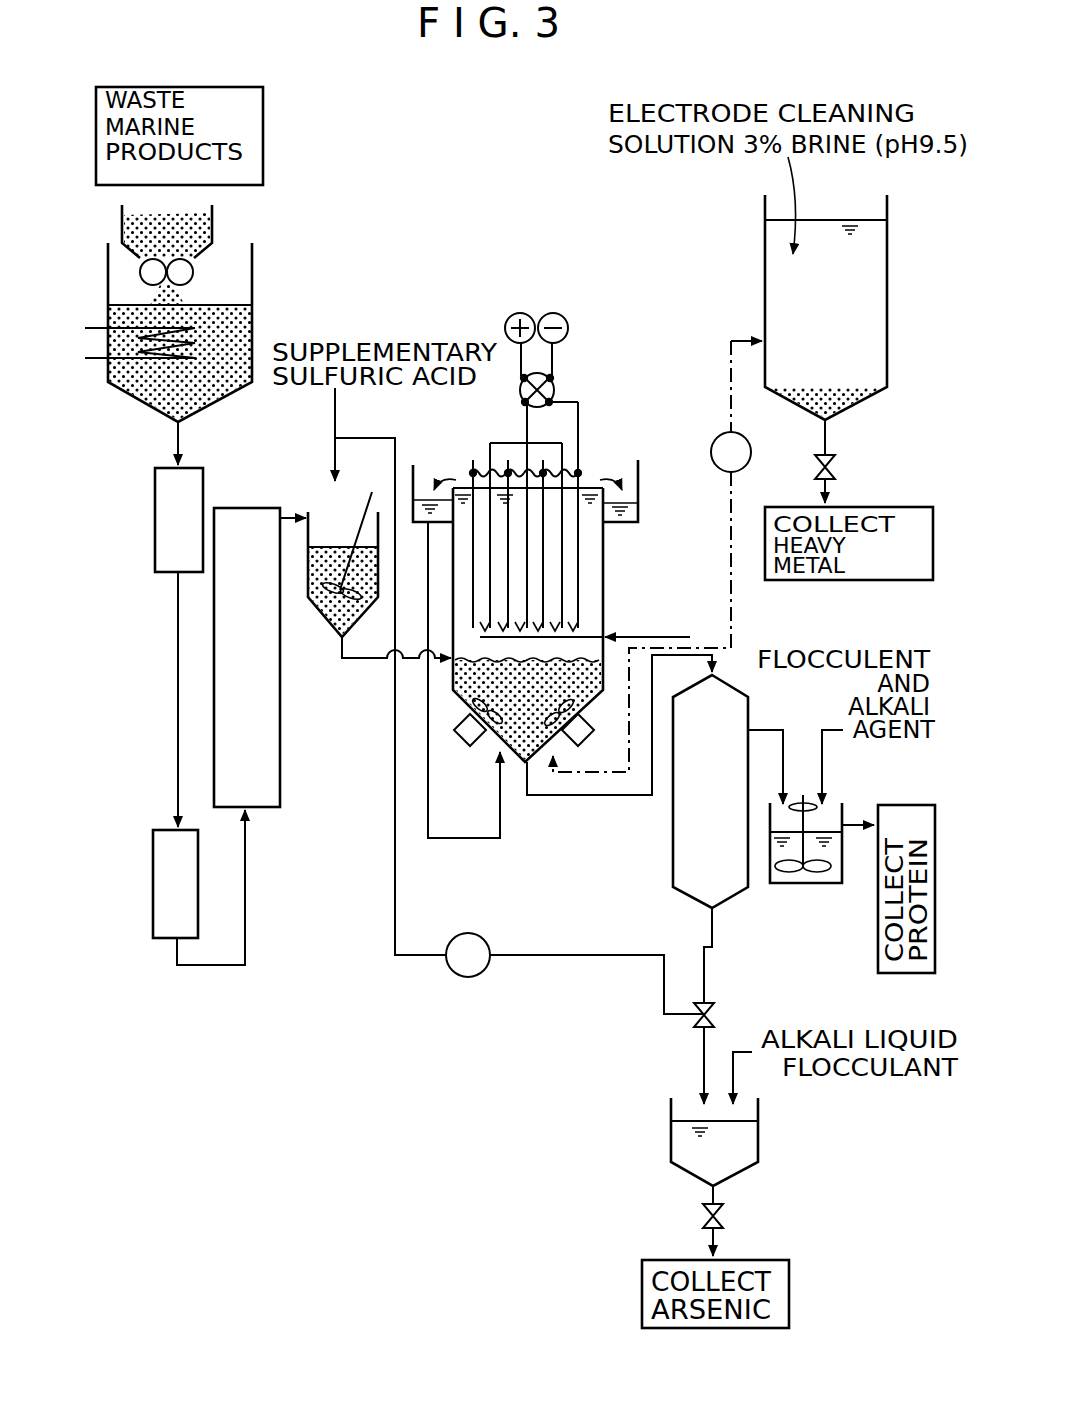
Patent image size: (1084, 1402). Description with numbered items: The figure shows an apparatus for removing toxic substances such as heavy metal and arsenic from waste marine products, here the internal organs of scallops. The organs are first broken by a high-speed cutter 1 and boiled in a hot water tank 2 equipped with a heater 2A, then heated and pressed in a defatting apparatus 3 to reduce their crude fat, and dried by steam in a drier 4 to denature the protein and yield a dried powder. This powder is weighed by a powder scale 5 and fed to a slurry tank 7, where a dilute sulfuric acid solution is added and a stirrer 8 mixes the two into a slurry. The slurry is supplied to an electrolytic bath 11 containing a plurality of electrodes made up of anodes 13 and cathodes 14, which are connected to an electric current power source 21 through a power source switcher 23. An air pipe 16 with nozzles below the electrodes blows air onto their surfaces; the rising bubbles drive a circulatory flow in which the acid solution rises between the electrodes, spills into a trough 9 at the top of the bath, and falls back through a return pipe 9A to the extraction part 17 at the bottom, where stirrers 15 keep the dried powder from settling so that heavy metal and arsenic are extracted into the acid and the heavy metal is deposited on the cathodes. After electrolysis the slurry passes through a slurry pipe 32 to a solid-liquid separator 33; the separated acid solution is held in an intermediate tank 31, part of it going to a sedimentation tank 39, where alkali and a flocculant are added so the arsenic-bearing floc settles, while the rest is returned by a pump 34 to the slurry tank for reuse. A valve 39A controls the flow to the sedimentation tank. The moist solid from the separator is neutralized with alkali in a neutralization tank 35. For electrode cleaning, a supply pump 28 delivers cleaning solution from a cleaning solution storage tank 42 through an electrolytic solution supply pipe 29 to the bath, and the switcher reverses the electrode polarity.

The high-speed cutter 1 is at (208, 268).
The hot water tank 2 is at (188, 339).
The heater 2A is at (96, 362).
The defatting apparatus 3 is at (153, 530).
The drier 4 is at (152, 865).
The powder scale 5 is at (281, 645).
The slurry tank 7 is at (339, 578).
The stirrer 8 is at (362, 518).
The trough 9 is at (415, 475).
The return pipe 9A is at (468, 840).
The electrolytic bath 11 is at (568, 596).
The anodes 13 is at (553, 580).
The cathodes 14 is at (562, 523).
The stirrers 15 is at (470, 748).
The air pipe 16 is at (603, 625).
The extraction part 17 is at (538, 712).
The electric current power source 21 is at (544, 291).
The power source switcher 23 is at (556, 391).
The supply pump 28 is at (712, 442).
The electrolytic solution supply pipe 29 is at (733, 622).
The intermediate tank 31 is at (732, 903).
The slurry pipe 32 is at (633, 798).
The solid-liquid separator 33 is at (748, 717).
The pump 34 is at (490, 968).
The neutralization tank 35 is at (800, 884).
The sedimentation tank 39 is at (758, 1131).
The valve 39A is at (740, 1050).
The cleaning solution storage tank 42 is at (888, 272).